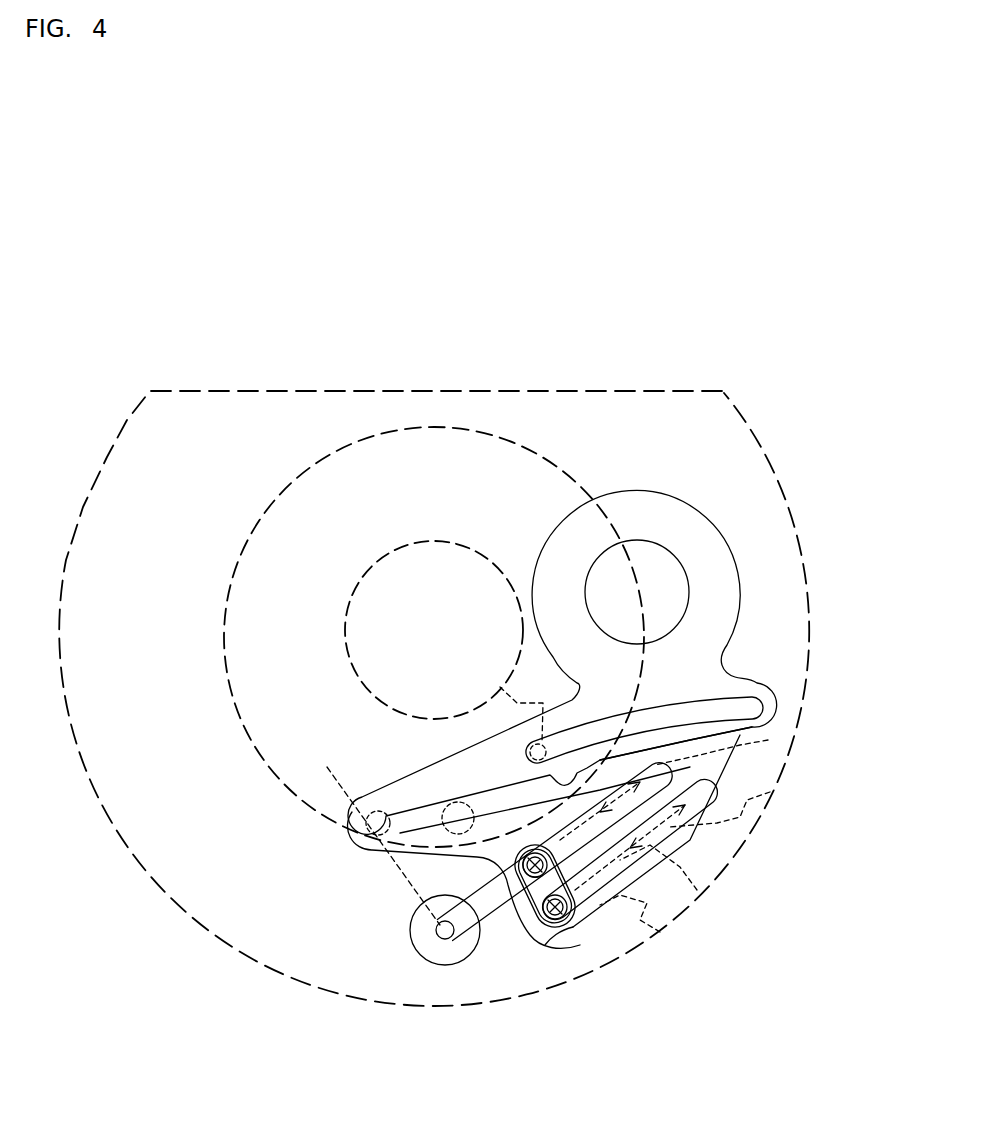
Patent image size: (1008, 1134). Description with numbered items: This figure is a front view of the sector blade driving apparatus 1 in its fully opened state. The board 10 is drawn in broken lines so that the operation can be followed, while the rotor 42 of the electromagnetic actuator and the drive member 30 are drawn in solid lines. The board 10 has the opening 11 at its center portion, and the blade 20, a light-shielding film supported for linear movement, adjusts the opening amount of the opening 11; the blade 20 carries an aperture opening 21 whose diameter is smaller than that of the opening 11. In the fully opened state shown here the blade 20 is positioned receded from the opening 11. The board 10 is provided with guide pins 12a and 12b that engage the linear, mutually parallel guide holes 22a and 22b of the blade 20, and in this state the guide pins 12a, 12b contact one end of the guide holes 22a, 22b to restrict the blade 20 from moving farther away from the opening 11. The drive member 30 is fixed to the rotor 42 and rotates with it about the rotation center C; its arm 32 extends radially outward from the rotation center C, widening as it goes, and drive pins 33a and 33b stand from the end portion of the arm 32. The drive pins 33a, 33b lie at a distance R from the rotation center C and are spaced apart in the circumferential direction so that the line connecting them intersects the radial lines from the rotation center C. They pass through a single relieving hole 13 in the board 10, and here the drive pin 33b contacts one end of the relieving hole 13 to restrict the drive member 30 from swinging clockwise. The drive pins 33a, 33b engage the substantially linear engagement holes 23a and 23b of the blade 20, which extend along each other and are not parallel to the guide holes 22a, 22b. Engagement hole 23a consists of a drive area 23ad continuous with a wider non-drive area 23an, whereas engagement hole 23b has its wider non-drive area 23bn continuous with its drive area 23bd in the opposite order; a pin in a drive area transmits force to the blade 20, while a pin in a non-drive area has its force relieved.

The sector blade driving apparatus 1 is at (668, 358).
The board 10 is at (695, 390).
The opening 11 is at (447, 590).
The guide pin 12a is at (530, 700).
The guide pin 12b is at (357, 838).
The relieving hole 13 is at (490, 797).
The distance R is at (457, 757).
The blade 20 is at (717, 510).
The aperture opening 21 is at (675, 594).
The guide hole 22a is at (737, 707).
The guide hole 22b is at (478, 903).
The engagement hole 23a is at (690, 767).
The engagement hole 23b is at (690, 838).
The non-drive area 23an is at (768, 740).
The drive area 23bd is at (770, 792).
The drive area 23ad is at (697, 890).
The non-drive area 23bn is at (660, 932).
The drive member 30 is at (485, 947).
The arm 32 is at (500, 927).
The drive pin 33a is at (535, 880).
The drive pin 33b is at (568, 910).
The rotor 42 is at (448, 953).
The rotation center C is at (443, 932).